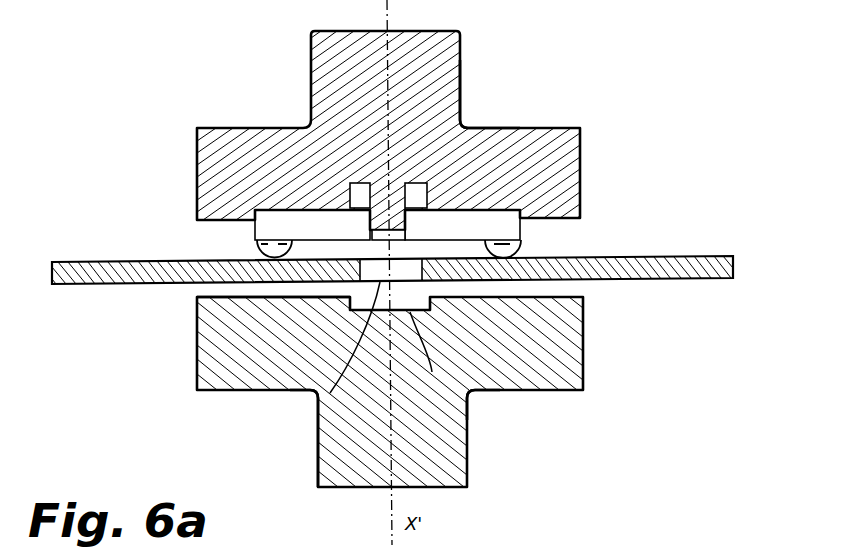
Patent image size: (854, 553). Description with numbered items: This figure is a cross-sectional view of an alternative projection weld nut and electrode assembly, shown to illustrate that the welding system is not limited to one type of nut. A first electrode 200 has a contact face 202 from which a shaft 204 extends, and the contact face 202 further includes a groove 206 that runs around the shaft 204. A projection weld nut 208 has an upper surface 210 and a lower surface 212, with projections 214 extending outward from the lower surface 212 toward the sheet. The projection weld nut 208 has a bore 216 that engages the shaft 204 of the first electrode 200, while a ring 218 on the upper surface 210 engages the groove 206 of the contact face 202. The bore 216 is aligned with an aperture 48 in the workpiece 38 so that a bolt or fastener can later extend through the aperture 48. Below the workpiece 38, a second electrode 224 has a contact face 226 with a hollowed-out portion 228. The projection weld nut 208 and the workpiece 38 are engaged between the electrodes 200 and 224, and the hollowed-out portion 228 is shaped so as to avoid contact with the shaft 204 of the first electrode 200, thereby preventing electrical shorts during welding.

The workpiece 38 is at (673, 256).
The aperture 48 is at (322, 395).
The first electrode 200 is at (466, 128).
The contact face 202 is at (215, 222).
The shaft 204 is at (372, 192).
The groove 206 is at (385, 220).
The projection weld nut 208 is at (478, 205).
The upper surface 210 is at (482, 212).
The lower surface 212 is at (533, 256).
The projections 214 is at (522, 254).
The bore 216 is at (393, 210).
The ring 218 is at (428, 184).
The second electrode 224 is at (568, 352).
The contact face 226 is at (200, 297).
The hollowed-out portion 228 is at (471, 393).